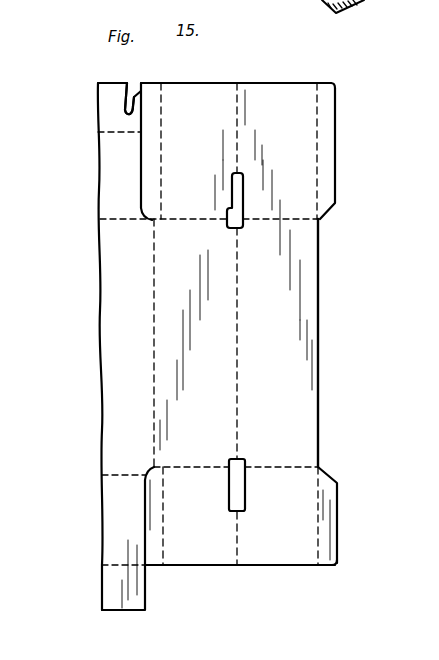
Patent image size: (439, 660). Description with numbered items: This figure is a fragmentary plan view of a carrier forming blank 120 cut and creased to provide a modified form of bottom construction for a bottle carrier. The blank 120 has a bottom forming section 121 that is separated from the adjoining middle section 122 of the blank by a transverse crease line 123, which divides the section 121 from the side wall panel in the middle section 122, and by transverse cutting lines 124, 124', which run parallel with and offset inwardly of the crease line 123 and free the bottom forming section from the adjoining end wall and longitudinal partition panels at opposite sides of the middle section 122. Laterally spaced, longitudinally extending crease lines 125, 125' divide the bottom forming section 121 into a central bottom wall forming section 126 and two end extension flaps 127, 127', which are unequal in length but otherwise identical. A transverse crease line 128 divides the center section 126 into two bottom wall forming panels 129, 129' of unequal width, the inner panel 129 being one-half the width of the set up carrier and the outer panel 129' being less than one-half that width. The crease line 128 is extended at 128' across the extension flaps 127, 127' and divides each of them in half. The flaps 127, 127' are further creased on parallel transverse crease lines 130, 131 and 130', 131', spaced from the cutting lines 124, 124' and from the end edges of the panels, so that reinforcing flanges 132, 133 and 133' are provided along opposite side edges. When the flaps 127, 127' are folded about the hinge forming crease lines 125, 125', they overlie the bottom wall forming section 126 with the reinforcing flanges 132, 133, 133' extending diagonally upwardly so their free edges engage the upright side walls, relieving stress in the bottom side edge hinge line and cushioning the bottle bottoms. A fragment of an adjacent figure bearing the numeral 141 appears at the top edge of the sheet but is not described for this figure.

The carrier forming blank 120 is at (103, 97).
The bottom forming section 121 is at (202, 556).
The middle section 122 is at (103, 597).
The transverse crease line 123 is at (155, 340).
The transverse cutting line 124 is at (150, 151).
The transverse cutting line 124' is at (102, 516).
The longitudinally extending crease line 125 is at (210, 234).
The longitudinally extending crease line 125' is at (236, 452).
The central bottom wall forming section 126 is at (290, 341).
The end extension flap 127 is at (236, 72).
The end extension flap 127' is at (287, 579).
The transverse crease line 128 is at (260, 324).
The extension of crease line 128' is at (258, 324).
The inner bottom wall forming panel 129 is at (205, 366).
The outer bottom wall forming panel 129' is at (275, 366).
The transverse crease line 130 is at (182, 151).
The transverse crease line 130' is at (187, 516).
The transverse crease line 131 is at (349, 151).
The transverse crease line 131' is at (352, 516).
The reinforcing flange 132 is at (149, 92).
The reinforcing flange 133 is at (338, 67).
The reinforcing flange 133' is at (359, 561).
The container fragment 141 is at (374, 0).